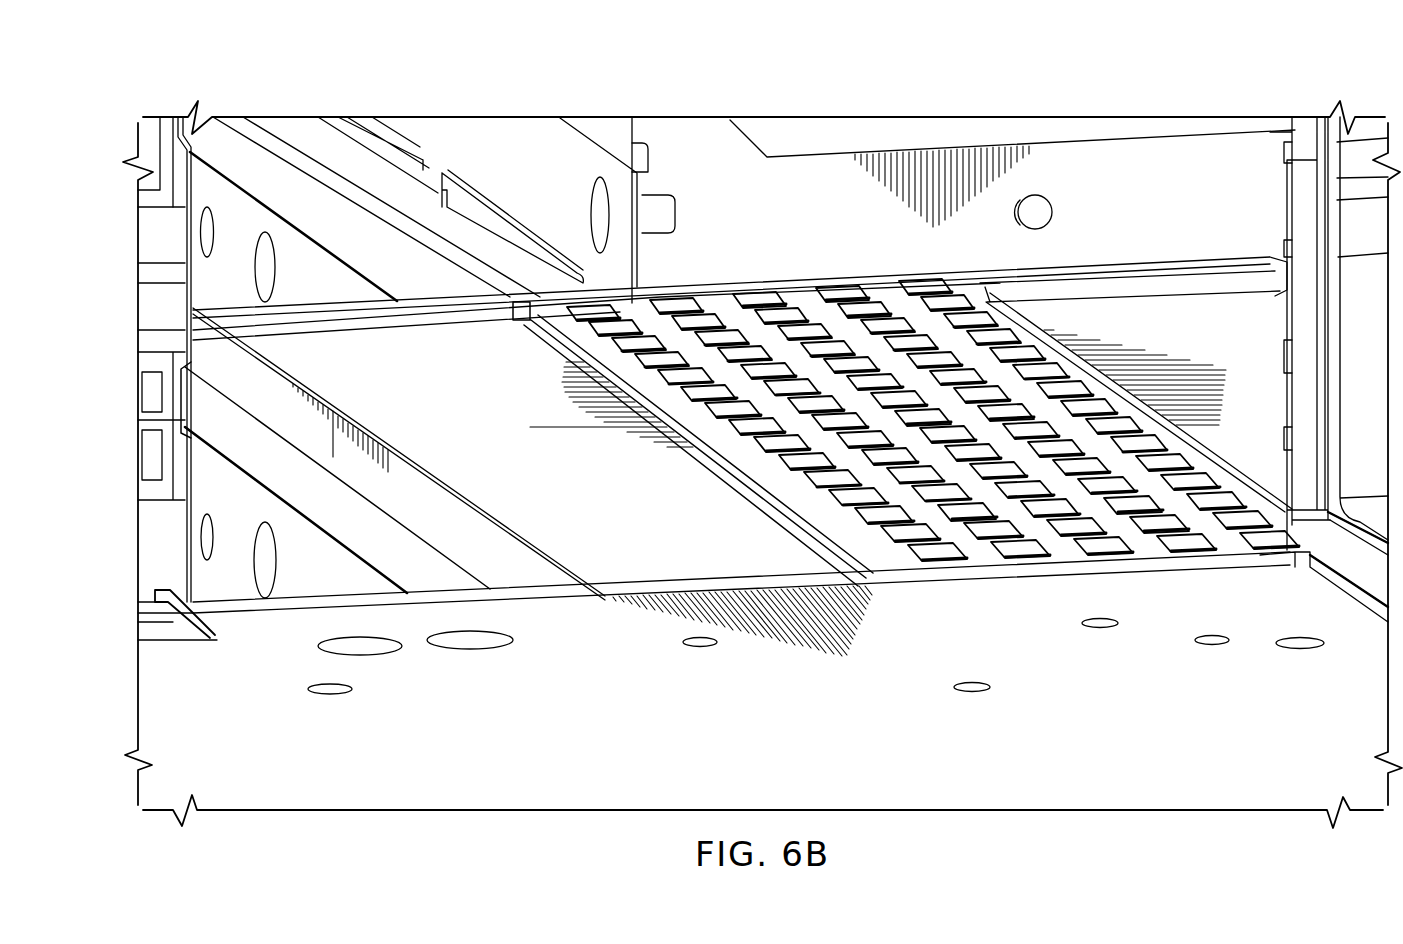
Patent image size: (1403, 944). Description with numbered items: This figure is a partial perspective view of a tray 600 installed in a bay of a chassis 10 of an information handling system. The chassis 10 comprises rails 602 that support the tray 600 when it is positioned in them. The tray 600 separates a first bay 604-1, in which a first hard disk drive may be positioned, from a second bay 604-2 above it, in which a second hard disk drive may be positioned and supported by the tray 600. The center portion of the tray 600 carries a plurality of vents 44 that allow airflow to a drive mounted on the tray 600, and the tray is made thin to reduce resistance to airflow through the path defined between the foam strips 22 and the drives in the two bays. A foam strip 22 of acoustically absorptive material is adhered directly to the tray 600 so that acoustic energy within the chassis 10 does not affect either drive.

The chassis 10 is at (257, 100).
The foam strip 22 is at (548, 335).
The vents 44 is at (915, 297).
The tray 600 is at (795, 282).
The rails 602 is at (473, 148).
The first bay 604-1 is at (118, 312).
The second bay 604-2 is at (118, 140).